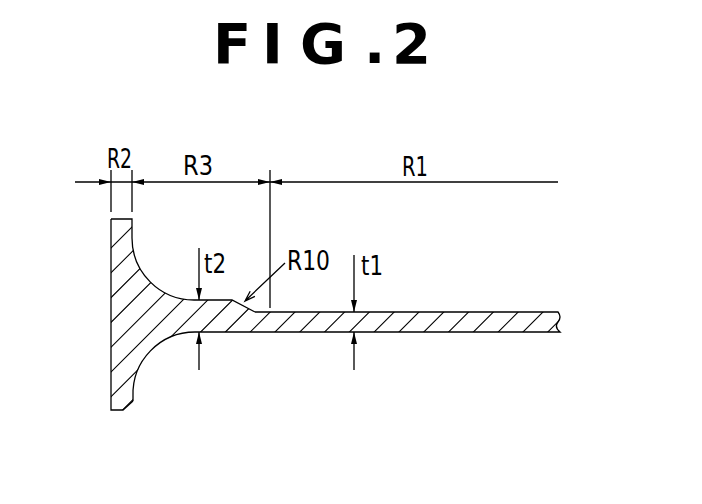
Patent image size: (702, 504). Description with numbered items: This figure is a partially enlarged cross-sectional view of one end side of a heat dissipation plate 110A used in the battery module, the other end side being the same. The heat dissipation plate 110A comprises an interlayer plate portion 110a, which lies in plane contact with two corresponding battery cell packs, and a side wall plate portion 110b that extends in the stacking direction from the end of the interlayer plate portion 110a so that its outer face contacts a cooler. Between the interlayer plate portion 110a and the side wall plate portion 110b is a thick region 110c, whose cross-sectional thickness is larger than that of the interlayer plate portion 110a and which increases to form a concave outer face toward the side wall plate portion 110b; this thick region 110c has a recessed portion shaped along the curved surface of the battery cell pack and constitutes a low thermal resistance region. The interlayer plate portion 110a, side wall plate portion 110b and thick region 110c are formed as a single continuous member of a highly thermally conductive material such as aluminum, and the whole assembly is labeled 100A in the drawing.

The case 100A is at (351, 318).
The heat dissipation plate 110A is at (351, 318).
The interlayer plate portion 110a is at (418, 333).
The side wall plate portion 110b is at (130, 407).
The thick region 110c is at (162, 342).